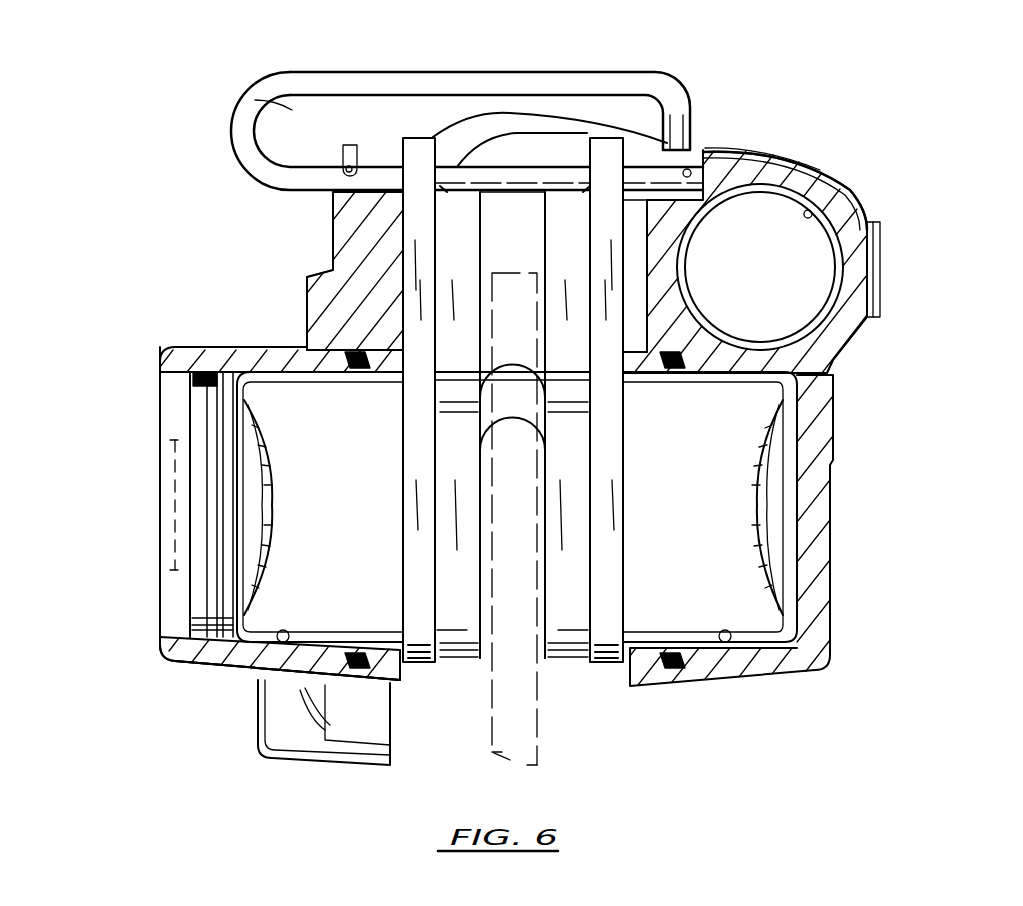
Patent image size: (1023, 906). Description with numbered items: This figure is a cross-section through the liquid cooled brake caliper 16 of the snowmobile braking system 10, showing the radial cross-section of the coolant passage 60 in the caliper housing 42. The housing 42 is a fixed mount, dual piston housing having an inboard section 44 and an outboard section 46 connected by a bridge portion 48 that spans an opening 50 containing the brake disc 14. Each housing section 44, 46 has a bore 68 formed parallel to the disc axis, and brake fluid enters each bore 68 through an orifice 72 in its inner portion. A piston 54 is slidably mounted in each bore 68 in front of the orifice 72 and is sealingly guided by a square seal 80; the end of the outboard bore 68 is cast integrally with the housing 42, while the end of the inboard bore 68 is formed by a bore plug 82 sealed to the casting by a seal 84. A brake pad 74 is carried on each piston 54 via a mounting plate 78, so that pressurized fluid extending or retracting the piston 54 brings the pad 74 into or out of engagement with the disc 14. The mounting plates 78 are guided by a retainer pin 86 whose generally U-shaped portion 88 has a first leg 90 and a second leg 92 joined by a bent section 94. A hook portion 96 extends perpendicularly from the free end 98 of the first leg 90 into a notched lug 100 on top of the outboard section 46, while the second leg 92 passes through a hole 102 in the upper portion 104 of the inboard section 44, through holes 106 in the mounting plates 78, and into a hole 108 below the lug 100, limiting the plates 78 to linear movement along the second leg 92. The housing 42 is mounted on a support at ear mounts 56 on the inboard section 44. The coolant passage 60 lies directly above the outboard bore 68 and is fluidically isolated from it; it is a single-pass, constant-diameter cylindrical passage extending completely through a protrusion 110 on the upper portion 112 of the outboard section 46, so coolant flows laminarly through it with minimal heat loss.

The lubrication pump assembly 10 is at (925, 128).
The disc 14 is at (540, 752).
The caliper 16 is at (815, 150).
The housing 42 is at (208, 348).
The inboard section 44 is at (178, 660).
The outboard section 46 is at (825, 608).
The bridge portion 48 is at (500, 118).
The opening 50 is at (520, 395).
The piston 54 is at (253, 368).
The ear mount 56 is at (290, 745).
The coolant passage 60 is at (858, 195).
The bore 68 is at (280, 650).
The orifice 72 is at (257, 420).
The brake pad 74 is at (452, 665).
The mounting plate 78 is at (415, 665).
The square seal 80 is at (355, 360).
The bore plug 82 is at (200, 545).
The seal 84 is at (160, 367).
The retainer pin 86 is at (400, 72).
The U-shaped portion 88 is at (441, 97).
The first leg 90 is at (455, 72).
The second leg 92 is at (527, 190).
The bent section 94 is at (250, 101).
The hook portion 96 is at (695, 110).
The free end 98 is at (660, 80).
The notched lug 100 is at (700, 150).
The hole 102 is at (350, 158).
The upper portion 104 is at (330, 222).
The holes 106 is at (450, 190).
The hole 108 is at (718, 146).
The protrusion 110 is at (882, 228).
The upper portion 112 is at (845, 332).